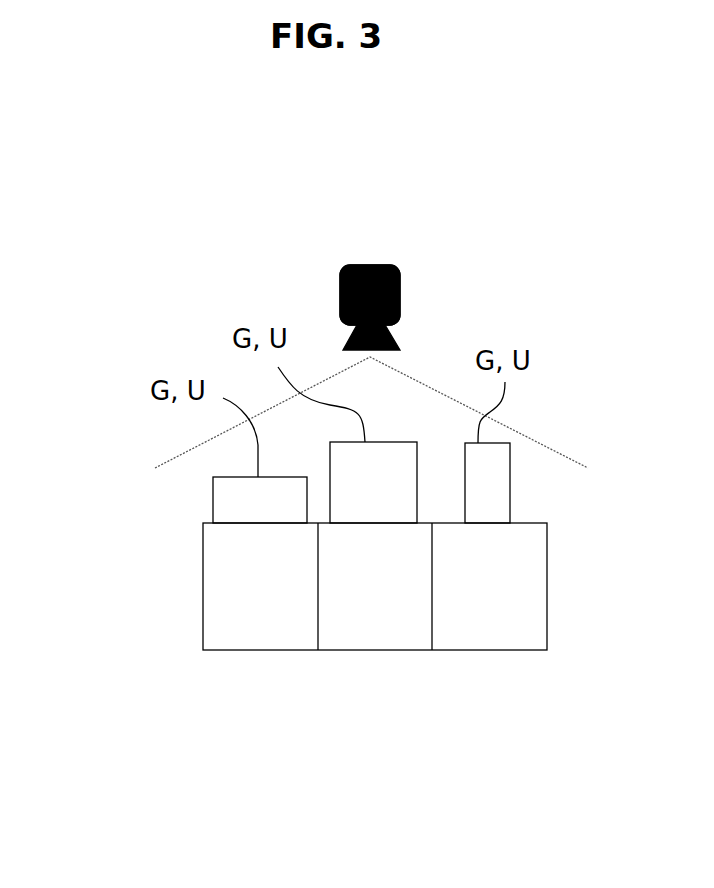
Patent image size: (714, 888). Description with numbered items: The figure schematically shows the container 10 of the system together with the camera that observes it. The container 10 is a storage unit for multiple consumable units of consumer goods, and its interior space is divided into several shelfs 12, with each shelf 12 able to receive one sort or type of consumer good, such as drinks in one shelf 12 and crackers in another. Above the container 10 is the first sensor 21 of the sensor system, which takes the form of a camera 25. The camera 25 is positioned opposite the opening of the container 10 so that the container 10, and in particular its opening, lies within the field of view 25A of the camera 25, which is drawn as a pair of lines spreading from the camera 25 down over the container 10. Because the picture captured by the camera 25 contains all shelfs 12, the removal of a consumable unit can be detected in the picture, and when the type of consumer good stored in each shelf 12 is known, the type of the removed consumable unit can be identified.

The first sensor 21 is at (368, 265).
The camera 25 is at (370, 295).
The field of view 25A is at (174, 458).
The container 10 is at (203, 557).
The shelf 12 is at (265, 612).